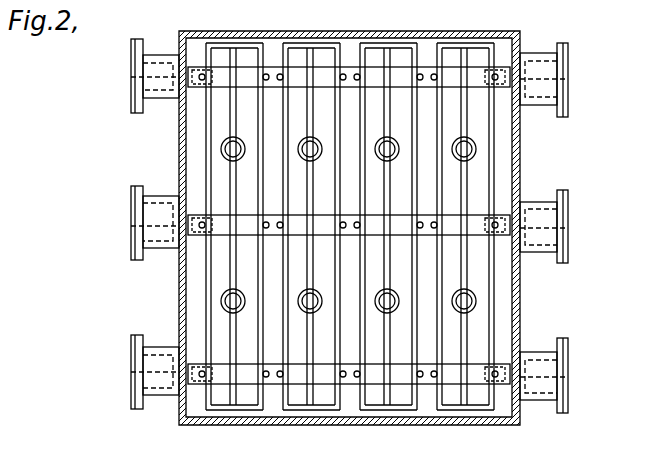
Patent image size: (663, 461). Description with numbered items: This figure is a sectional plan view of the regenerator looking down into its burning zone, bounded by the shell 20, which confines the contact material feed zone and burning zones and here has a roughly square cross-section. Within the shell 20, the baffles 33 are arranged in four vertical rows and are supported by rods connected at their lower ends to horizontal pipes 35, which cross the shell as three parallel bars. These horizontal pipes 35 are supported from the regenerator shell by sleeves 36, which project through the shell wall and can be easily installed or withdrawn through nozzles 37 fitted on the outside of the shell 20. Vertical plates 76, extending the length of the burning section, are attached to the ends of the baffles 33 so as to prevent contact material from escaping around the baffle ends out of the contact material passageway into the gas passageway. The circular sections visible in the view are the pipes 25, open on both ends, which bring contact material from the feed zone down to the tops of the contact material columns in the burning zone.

The shell 20 is at (462, 426).
The pipes 25 is at (400, 154).
The baffles 33 is at (477, 55).
The horizontal pipes 35 is at (198, 88).
The sleeves 36 is at (131, 228).
The nozzles 37 is at (157, 55).
The vertical plates 76 is at (371, 43).